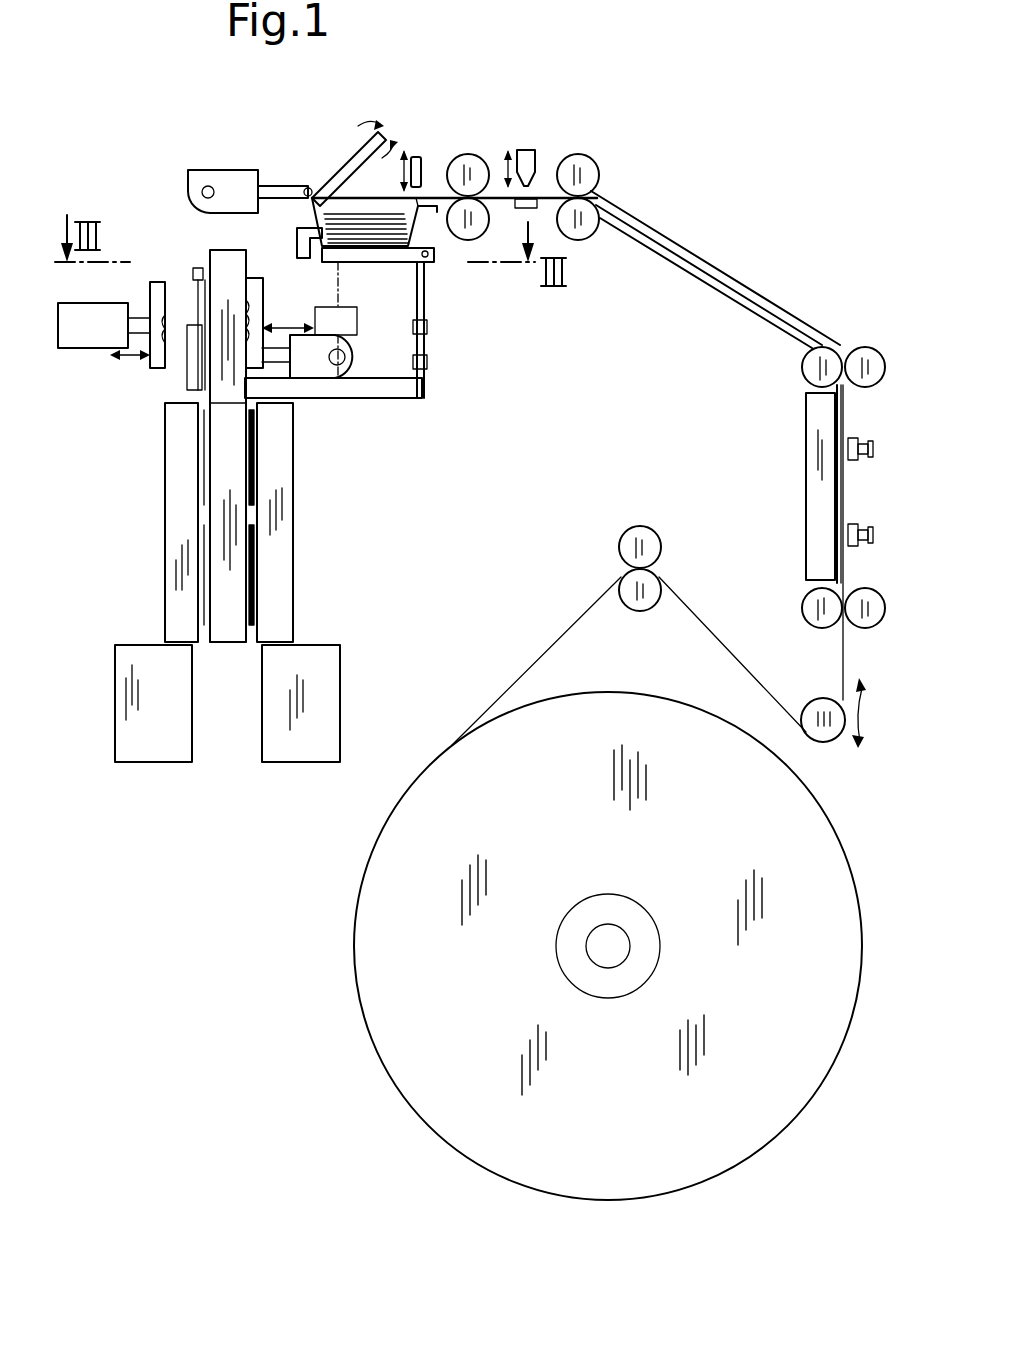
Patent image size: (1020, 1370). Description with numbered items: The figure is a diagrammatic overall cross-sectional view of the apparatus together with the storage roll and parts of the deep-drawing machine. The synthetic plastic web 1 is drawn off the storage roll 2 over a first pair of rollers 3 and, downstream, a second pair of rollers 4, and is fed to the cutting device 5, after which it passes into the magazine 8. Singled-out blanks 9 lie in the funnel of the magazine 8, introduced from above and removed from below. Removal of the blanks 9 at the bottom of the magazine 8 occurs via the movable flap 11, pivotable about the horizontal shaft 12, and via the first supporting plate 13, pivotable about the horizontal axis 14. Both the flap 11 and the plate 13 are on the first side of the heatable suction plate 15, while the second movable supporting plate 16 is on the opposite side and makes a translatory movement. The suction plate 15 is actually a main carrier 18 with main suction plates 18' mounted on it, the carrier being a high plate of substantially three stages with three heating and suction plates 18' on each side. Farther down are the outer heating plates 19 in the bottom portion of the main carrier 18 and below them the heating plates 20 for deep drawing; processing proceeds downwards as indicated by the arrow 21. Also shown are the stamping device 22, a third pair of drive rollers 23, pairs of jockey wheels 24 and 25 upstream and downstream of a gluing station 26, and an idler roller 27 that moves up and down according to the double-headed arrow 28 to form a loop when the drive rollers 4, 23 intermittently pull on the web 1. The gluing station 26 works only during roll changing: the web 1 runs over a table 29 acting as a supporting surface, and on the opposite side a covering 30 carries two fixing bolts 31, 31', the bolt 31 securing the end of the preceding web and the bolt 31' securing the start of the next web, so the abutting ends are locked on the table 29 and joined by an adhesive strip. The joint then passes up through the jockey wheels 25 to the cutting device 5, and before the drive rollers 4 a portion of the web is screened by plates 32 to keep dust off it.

The synthetic plastic web 1 is at (500, 185).
The storage roll 2 is at (378, 985).
The first pair of rollers 3 is at (665, 528).
The second pair of rollers 4 is at (588, 150).
The cutting device 5 is at (417, 128).
The magazine 8 is at (318, 145).
The singled-out blanks 9 is at (362, 215).
The movable flap 11 is at (368, 256).
The horizontal shaft 12 is at (428, 258).
The first supporting plate 13 is at (258, 292).
The horizontal axis 14 is at (340, 362).
The heatable suction plate 15 is at (200, 246).
The second movable supporting plate 16 is at (153, 362).
The main carrier 18 is at (179, 522).
The main suction plates 18' is at (282, 517).
The outer heating plates 19 is at (175, 458).
The heating plates 20 is at (322, 688).
The arrow 21 is at (228, 678).
The stamping device 22 is at (528, 135).
The third pair of drive rollers 23 is at (465, 250).
The pair of jockey wheels 24 is at (792, 604).
The pair of jockey wheels 25 is at (792, 360).
The gluing station 26 is at (785, 460).
The idler roller 27 is at (826, 733).
The double-headed arrow 28 is at (860, 710).
The table 29 is at (815, 500).
The covering 30 is at (845, 418).
The fixing bolt 31 is at (869, 471).
The fixing bolt 31' is at (885, 551).
The plates 32 is at (668, 235).